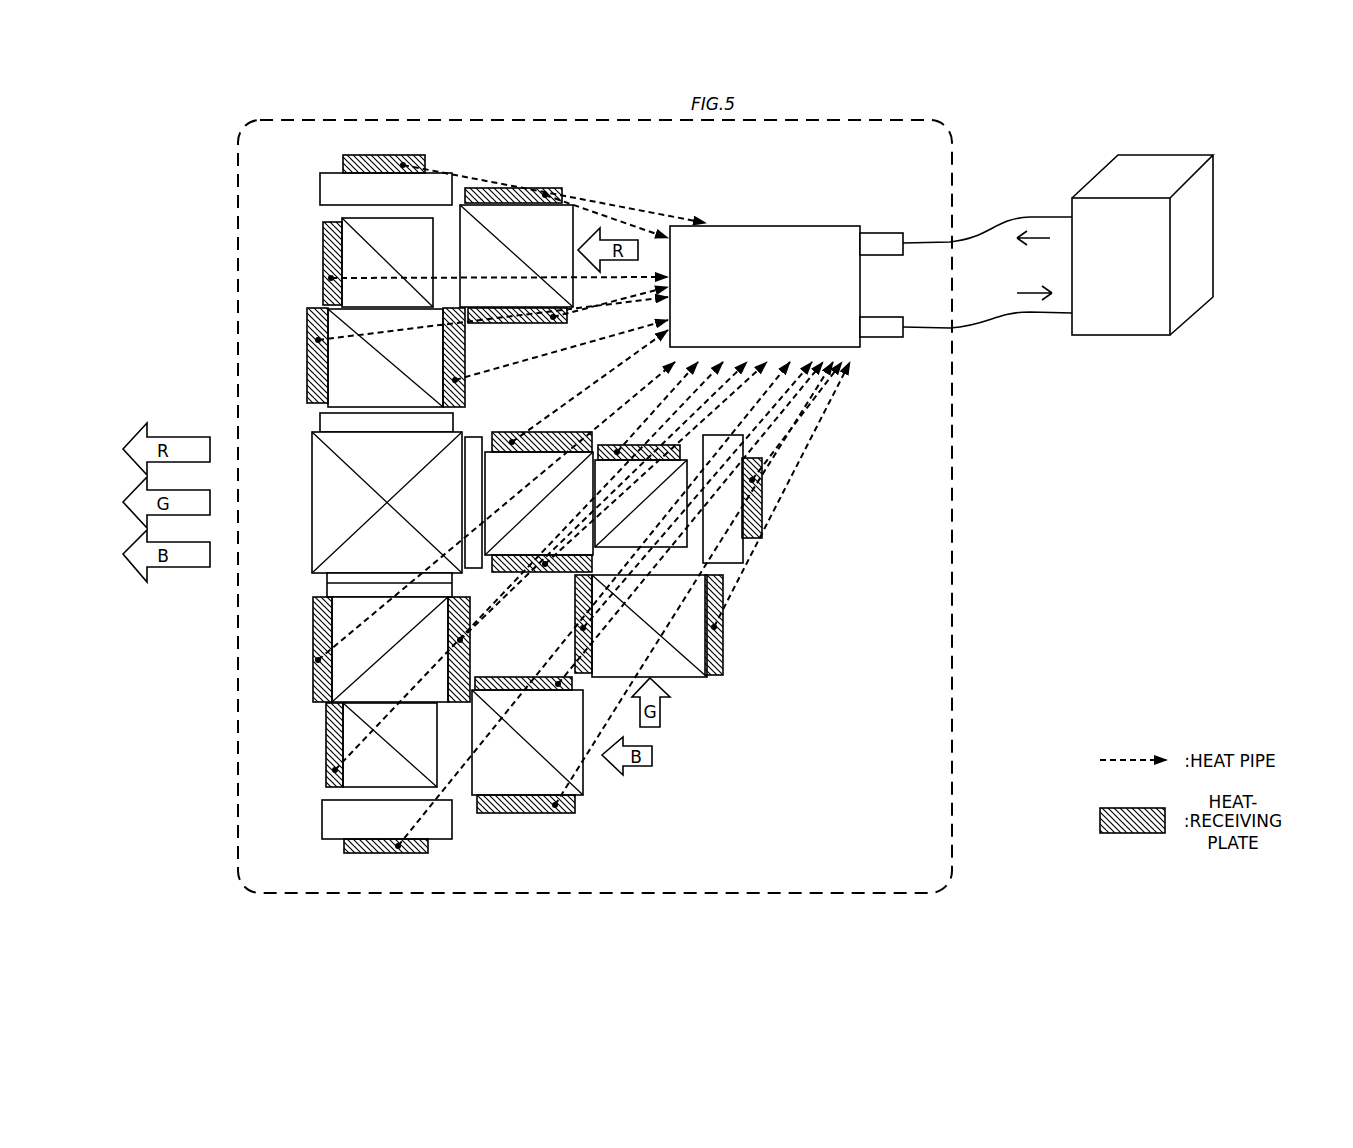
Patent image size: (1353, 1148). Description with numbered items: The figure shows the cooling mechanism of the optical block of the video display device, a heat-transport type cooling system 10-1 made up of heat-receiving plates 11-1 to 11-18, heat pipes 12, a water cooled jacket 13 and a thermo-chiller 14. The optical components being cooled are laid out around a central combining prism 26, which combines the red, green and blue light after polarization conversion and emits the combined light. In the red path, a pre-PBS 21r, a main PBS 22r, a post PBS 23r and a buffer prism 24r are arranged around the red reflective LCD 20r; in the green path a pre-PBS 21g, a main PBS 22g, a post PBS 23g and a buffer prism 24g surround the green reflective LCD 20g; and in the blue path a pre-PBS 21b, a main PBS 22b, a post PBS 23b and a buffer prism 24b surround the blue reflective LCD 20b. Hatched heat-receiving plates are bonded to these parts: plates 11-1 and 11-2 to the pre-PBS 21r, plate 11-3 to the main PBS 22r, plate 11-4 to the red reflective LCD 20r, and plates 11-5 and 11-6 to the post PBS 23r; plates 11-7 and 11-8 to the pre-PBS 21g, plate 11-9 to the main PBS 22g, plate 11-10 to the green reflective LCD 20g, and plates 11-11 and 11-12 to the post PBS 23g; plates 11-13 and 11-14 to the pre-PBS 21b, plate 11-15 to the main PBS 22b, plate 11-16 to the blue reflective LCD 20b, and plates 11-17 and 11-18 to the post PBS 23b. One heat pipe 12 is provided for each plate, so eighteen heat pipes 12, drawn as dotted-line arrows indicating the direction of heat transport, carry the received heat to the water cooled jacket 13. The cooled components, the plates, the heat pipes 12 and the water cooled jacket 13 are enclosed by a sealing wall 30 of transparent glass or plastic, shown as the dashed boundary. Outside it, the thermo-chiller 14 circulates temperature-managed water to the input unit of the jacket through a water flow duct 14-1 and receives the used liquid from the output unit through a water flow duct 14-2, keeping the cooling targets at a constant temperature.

The heat-transport type cooling system 10-1 is at (1012, 523).
The sealing wall 30 is at (953, 653).
The heat pipes 12 is at (647, 213).
The water cooled jacket 13 is at (787, 225).
The thermo-chiller 14 is at (1145, 153).
The water flow duct 14-1 is at (975, 237).
The water flow duct 14-2 is at (980, 327).
The heat-receiving plate 11-1 is at (503, 188).
The heat-receiving plate 11-2 is at (482, 323).
The heat-receiving plate 11-3 is at (323, 292).
The heat-receiving plate 11-4 is at (373, 154).
The heat-receiving plate 11-5 is at (465, 388).
The heat-receiving plate 11-6 is at (308, 357).
The heat-receiving plate 11-7 is at (723, 657).
The heat-receiving plate 11-8 is at (574, 646).
The heat-receiving plate 11-9 is at (600, 444).
The heat-receiving plate 11-10 is at (760, 493).
The heat-receiving plate 11-11 is at (560, 574).
The heat-receiving plate 11-12 is at (488, 432).
The heat-receiving plate 11-13 is at (532, 813).
The heat-receiving plate 11-14 is at (574, 688).
The heat-receiving plate 11-15 is at (327, 768).
The heat-receiving plate 11-16 is at (343, 848).
The heat-receiving plate 11-17 is at (458, 703).
The heat-receiving plate 11-18 is at (312, 673).
The red reflective LCD 20r is at (320, 190).
The green reflective LCD 20g is at (745, 555).
The blue reflective LCD 20b is at (450, 839).
The pre-PBS 21r is at (578, 225).
The pre-PBS 21g is at (692, 680).
The pre-PBS 21b is at (585, 798).
The main PBS 22r is at (357, 217).
The main PBS 22g is at (689, 458).
The main PBS 22b is at (360, 787).
The post PBS 23r is at (330, 407).
The post PBS 23g is at (597, 556).
The post PBS 23b is at (440, 703).
The buffer prism 24r is at (320, 422).
The buffer prism 24g is at (465, 568).
The buffer prism 24b is at (327, 583).
The 4p prism 26 is at (312, 525).